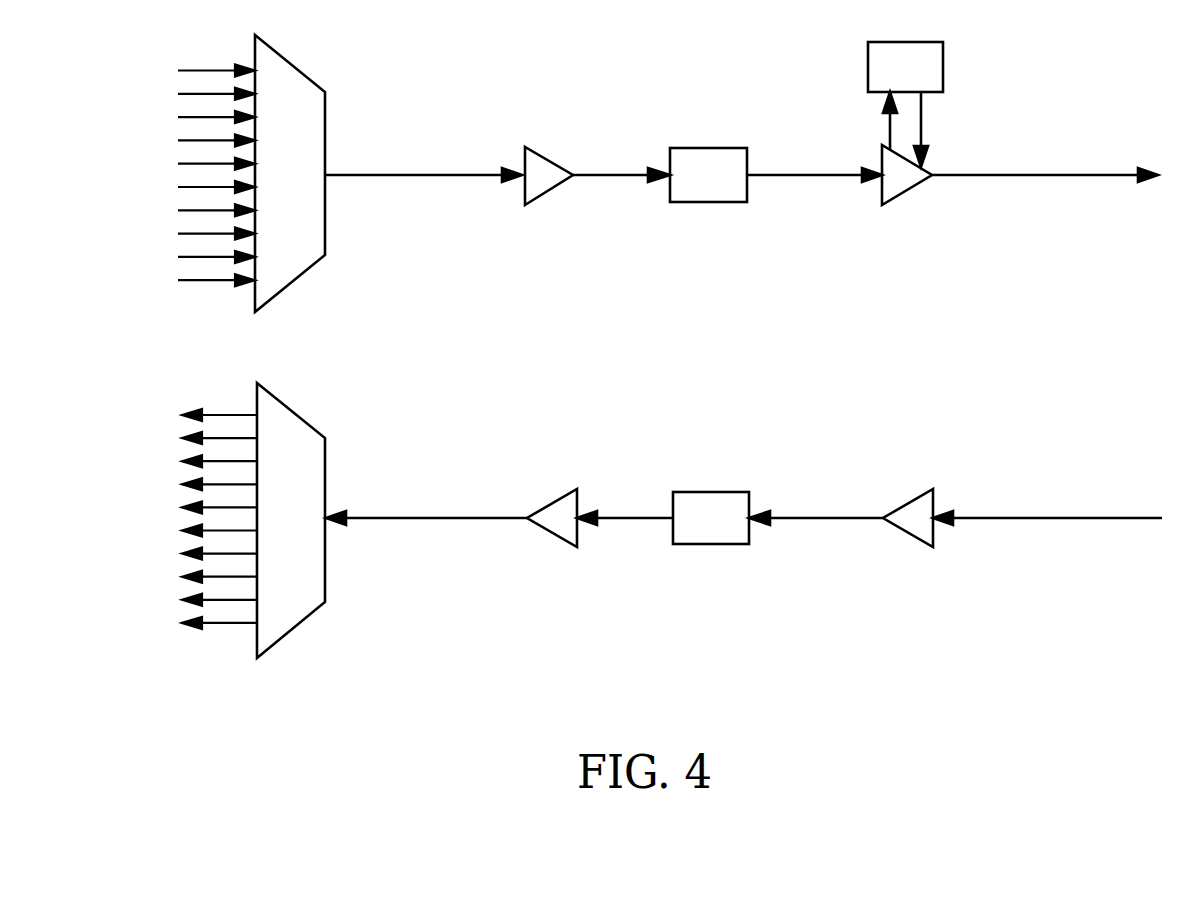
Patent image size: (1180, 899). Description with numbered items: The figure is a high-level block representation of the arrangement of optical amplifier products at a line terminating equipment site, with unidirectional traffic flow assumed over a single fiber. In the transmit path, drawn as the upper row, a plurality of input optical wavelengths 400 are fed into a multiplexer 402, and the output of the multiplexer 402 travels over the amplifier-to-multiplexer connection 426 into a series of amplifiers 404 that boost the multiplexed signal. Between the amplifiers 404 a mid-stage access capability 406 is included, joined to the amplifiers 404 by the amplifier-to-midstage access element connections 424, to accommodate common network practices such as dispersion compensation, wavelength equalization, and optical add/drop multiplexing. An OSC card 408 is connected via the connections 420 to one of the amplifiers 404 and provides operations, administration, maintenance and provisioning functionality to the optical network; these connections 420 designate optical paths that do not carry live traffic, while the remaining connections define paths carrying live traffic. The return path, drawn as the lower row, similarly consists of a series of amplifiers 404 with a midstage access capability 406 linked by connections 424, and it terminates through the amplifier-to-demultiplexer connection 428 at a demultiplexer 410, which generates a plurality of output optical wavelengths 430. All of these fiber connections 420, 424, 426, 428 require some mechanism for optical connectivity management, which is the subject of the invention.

The input optical wavelengths 400 is at (172, 63).
The multiplexer 402 is at (311, 188).
The amplifiers 404 is at (542, 195).
The mid-stage access (MSA) capability 406 is at (702, 202).
The OSC card 408 is at (943, 68).
The demultiplexer 410 is at (311, 532).
The amplifier-to-OSC-card connections 420 is at (888, 134).
The amplifier-to-midstage access (MSA) element connections 424 is at (793, 175).
The amplifier-to-multiplexer connection 426 is at (462, 177).
The amplifier-to-demultiplexer connection 428 is at (462, 521).
The output optical wavelengths 430 is at (175, 412).